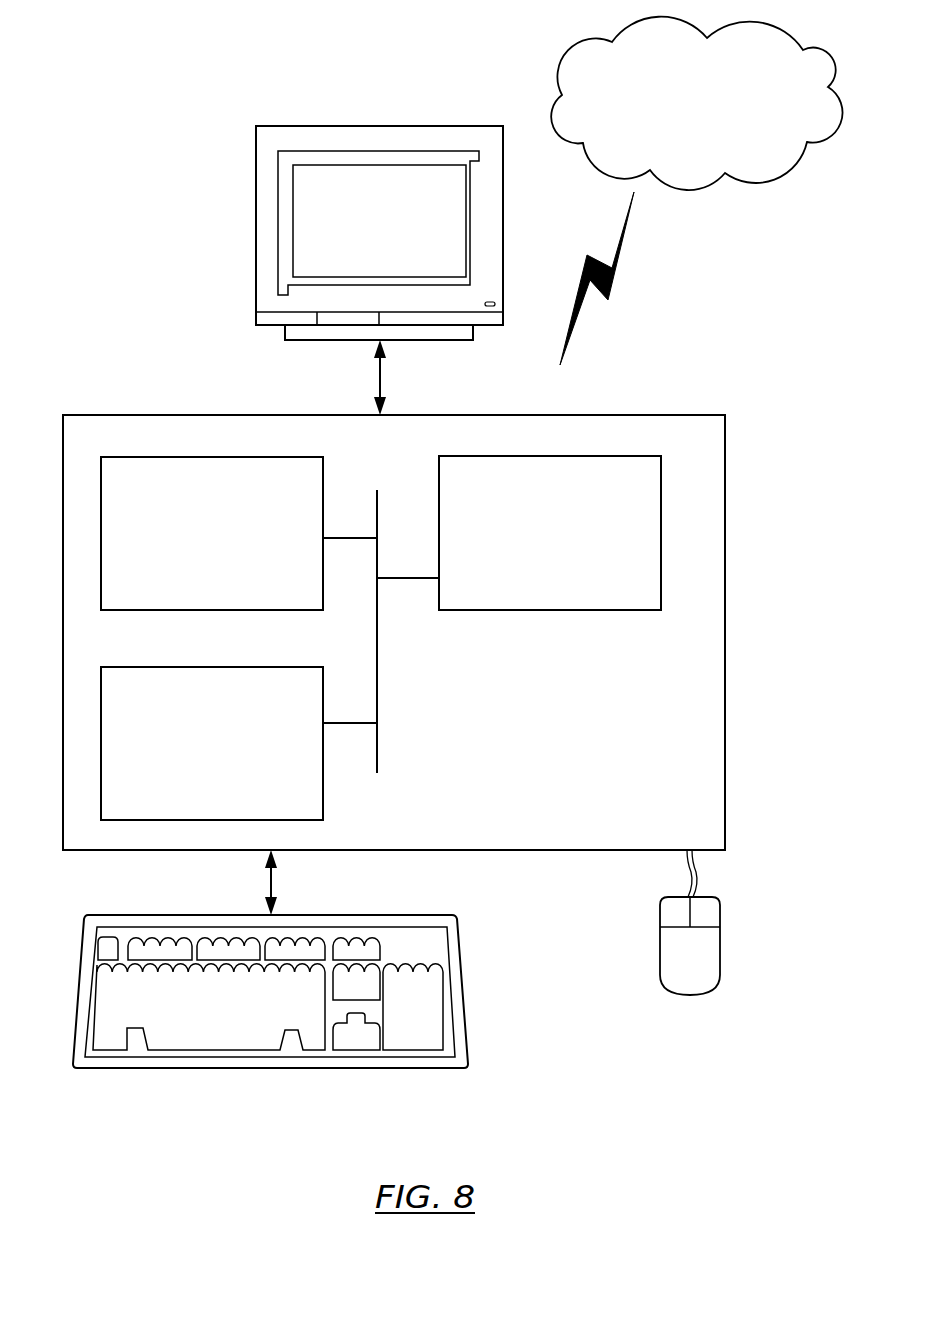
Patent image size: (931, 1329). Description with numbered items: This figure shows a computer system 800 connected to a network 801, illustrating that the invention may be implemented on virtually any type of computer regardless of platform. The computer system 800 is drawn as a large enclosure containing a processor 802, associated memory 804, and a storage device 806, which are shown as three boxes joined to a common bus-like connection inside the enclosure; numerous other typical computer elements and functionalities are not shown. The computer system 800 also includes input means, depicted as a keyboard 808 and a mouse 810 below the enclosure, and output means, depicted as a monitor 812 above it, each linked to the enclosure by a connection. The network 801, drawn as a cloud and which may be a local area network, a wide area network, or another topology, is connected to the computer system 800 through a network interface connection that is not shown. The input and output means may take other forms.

The computer system 800 is at (100, 99).
The network 801 is at (676, 116).
The processor 802 is at (530, 546).
The memory 804 is at (190, 545).
The storage device 806 is at (187, 756).
The keyboard 808 is at (186, 1027).
The mouse 810 is at (668, 967).
The monitor 812 is at (357, 237).